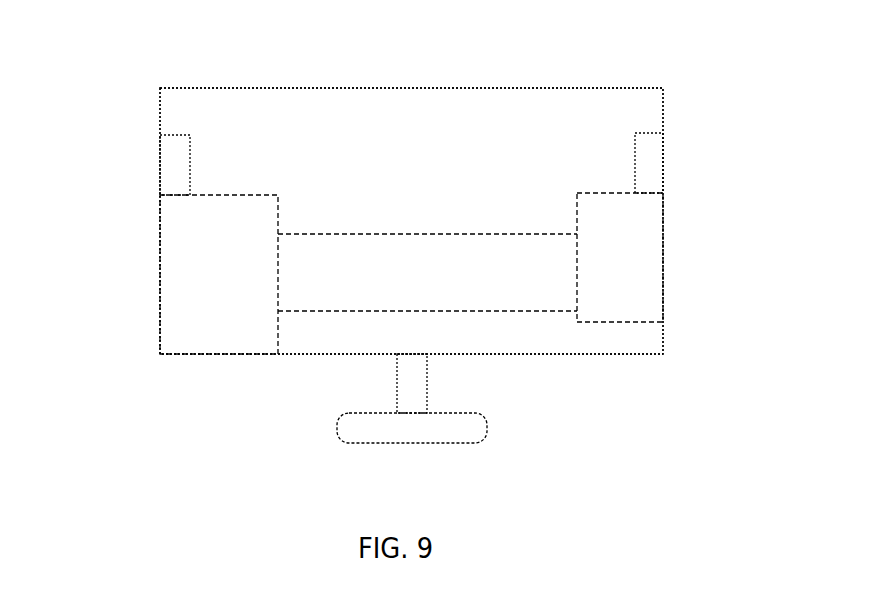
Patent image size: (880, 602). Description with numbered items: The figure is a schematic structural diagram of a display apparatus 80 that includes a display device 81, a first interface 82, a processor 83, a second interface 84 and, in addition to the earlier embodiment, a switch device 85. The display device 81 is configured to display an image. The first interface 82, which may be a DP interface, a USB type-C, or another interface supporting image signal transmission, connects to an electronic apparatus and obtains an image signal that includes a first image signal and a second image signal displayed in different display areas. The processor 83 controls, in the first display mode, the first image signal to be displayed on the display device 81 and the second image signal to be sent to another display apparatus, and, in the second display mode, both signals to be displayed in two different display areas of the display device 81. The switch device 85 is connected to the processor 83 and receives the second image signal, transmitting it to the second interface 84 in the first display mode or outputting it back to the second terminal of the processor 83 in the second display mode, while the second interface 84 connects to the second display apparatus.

The display apparatus 80 is at (411, 265).
The display device 81 is at (480, 118).
The first interface 82 is at (178, 148).
The processor 83 is at (192, 325).
The second interface 84 is at (647, 152).
The switch device 85 is at (648, 298).